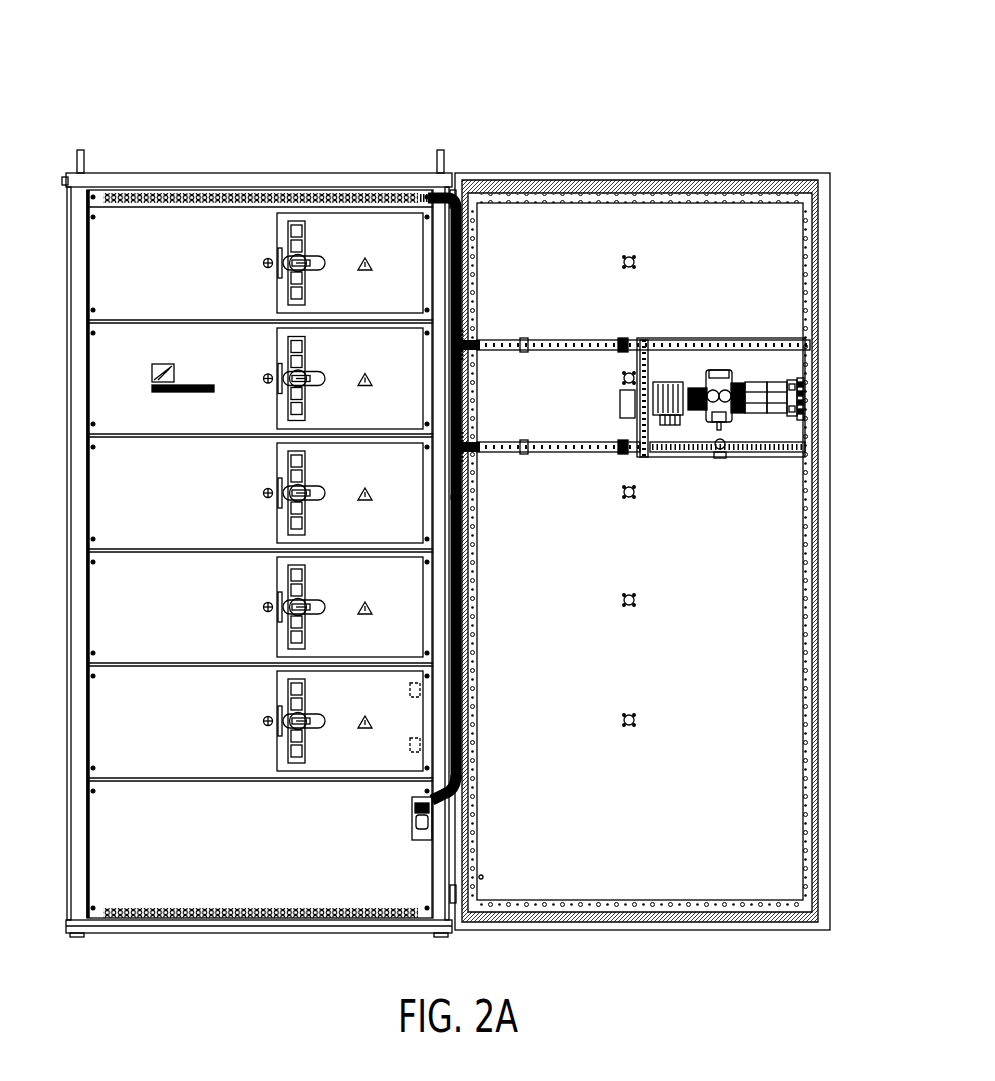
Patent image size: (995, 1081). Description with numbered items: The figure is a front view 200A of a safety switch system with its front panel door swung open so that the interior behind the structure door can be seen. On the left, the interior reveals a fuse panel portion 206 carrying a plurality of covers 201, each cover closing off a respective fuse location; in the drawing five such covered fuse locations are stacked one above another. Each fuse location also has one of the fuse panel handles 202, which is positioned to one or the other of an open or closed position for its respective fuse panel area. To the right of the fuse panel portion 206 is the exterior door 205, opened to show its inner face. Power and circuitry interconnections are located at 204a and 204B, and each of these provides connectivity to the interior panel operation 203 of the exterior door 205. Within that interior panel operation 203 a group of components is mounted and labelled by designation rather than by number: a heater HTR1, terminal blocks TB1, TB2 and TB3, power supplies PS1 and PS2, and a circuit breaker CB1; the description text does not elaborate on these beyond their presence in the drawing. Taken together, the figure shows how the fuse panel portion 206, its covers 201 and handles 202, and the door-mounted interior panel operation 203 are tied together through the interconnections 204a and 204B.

The front view 200A is at (112, 82).
The covers 201 is at (333, 232).
The fuse panel handles 202 is at (317, 265).
The interior panel operation 203 is at (795, 363).
The power and circuitry interconnections 204a is at (430, 193).
The power and circuitry interconnections 204B is at (430, 800).
The exterior door 205 is at (638, 556).
The fuse panel portion 206 is at (78, 720).
The heater HTR1 is at (660, 380).
The terminal block 1 TB1 is at (797, 381).
The terminal block 2 TB2 is at (738, 383).
The terminal block 3 TB3 is at (700, 385).
The power supply 1 PS1 is at (755, 382).
The power supply 2 PS2 is at (776, 382).
The circuit breaker 1 CB1 is at (790, 380).